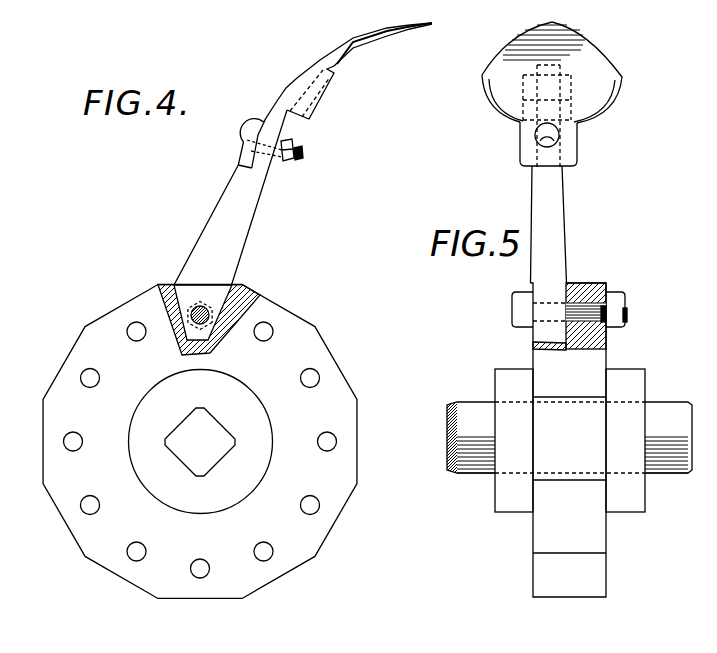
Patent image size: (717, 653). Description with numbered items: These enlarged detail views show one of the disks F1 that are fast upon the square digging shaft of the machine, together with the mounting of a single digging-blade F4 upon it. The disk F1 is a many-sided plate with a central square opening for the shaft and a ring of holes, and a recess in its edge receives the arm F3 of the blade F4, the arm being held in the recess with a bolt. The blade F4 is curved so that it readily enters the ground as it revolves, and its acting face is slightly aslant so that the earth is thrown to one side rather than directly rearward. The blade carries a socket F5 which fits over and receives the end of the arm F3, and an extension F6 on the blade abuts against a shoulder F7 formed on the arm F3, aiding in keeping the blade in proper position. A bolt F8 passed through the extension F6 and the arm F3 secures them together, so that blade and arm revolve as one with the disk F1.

In FIG. 4, the disk F1 is at (338, 493).
In FIG. 5, the disk F1 is at (607, 325).
In FIG. 4, the arm F3 is at (232, 257).
In FIG. 5, the arm F3 is at (560, 273).
In FIG. 4, the digging-blade F4 is at (433, 25).
In FIG. 5, the digging-blade F4 is at (575, 60).
In FIG. 4, the socket F5 is at (313, 115).
In FIG. 4, the extension F6 is at (250, 153).
In FIG. 4, the shoulder F7 is at (238, 165).
In FIG. 4, the bolt F8 is at (300, 162).